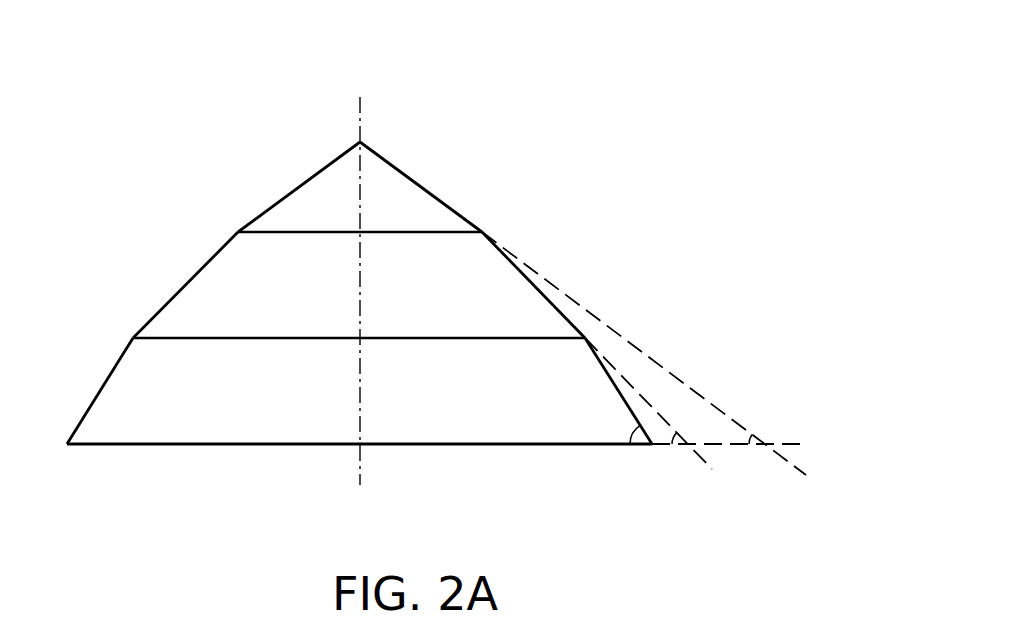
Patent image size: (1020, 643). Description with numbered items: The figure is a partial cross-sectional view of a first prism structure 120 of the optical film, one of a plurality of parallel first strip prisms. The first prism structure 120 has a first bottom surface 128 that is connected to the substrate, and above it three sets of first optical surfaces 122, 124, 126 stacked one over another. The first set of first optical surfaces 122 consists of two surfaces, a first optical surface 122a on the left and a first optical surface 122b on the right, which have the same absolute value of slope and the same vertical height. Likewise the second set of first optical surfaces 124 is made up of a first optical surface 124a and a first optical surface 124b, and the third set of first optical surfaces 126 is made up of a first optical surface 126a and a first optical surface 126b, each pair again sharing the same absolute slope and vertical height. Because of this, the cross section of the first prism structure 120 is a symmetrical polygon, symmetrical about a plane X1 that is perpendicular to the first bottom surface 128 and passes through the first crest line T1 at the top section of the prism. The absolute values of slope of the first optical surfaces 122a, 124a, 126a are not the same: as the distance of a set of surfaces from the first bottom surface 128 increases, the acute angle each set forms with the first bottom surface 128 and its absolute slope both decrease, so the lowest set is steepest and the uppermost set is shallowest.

The first prism structure 120 is at (160, 134).
The first set of first optical surfaces 122 is at (478, 393).
The first optical surface 122a is at (87, 413).
The first optical surface 122b is at (631, 411).
The second set of first optical surfaces 124 is at (435, 281).
The first optical surface 124a is at (162, 308).
The first optical surface 124b is at (552, 304).
The third set of first optical surfaces 126 is at (530, 44).
The first optical surface 126a is at (320, 171).
The first optical surface 126b is at (422, 186).
The first bottom surface 128 is at (402, 447).
The first crest line T1 is at (365, 143).
The plane X1 is at (362, 100).